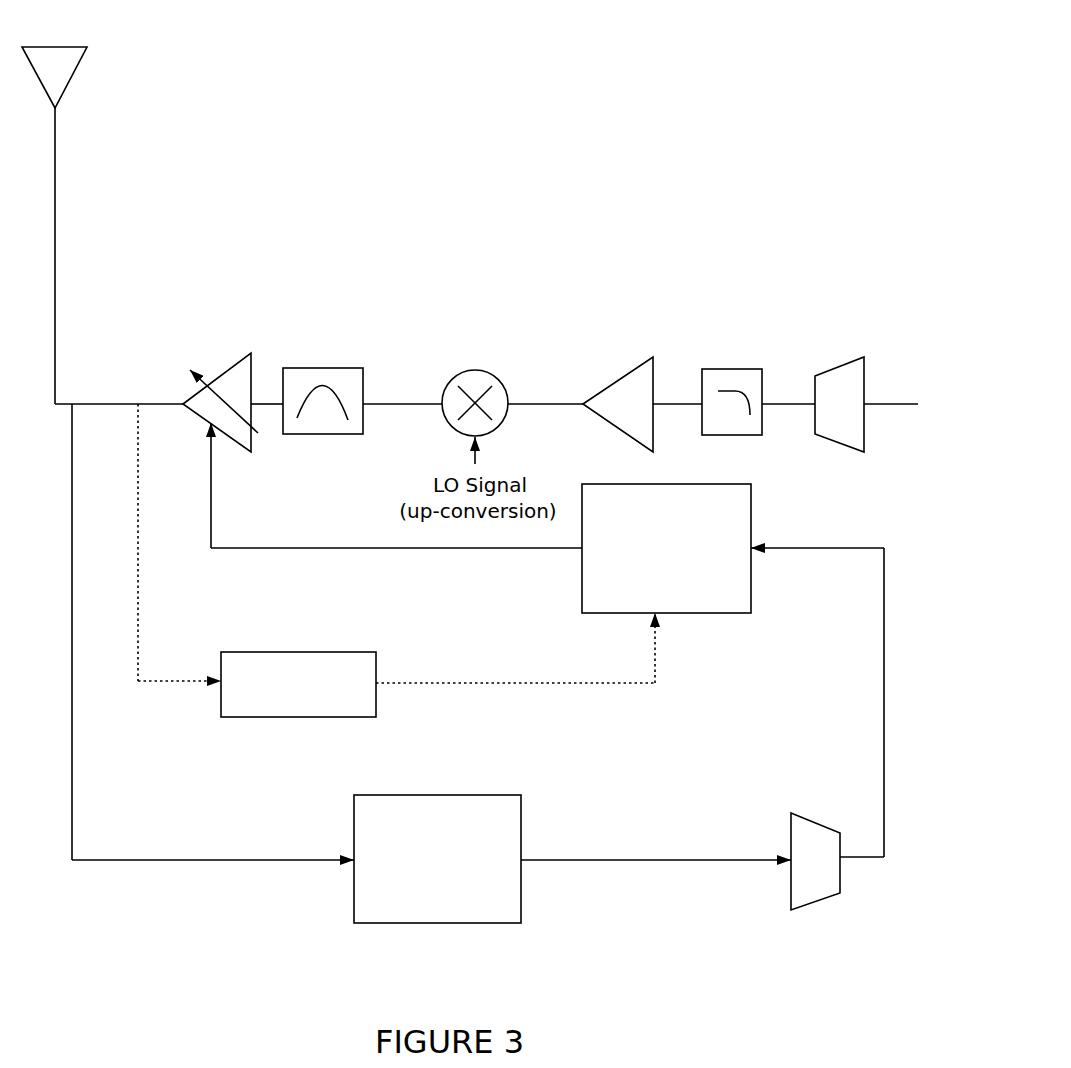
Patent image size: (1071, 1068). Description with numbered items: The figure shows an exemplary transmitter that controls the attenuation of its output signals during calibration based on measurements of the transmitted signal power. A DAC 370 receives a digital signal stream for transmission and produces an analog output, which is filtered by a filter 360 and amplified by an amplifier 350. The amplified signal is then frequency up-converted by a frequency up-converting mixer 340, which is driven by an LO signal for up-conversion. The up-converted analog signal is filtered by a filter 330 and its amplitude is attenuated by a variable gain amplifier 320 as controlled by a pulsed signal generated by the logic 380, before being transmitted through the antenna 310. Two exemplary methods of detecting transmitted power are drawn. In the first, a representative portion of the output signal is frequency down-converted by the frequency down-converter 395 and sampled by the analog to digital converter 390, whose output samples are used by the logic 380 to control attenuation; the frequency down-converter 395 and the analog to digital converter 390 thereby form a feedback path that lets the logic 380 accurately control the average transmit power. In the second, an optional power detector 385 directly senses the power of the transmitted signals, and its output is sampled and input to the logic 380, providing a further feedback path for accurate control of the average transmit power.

The antenna 310 is at (57, 138).
The variable gain amplifier 320 is at (232, 372).
The filter 330 is at (312, 380).
The frequency up-converting mixer 340 is at (470, 382).
The amplifier 350 is at (606, 385).
The filter 360 is at (733, 375).
The DAC 370 is at (846, 378).
The logic 380 is at (733, 513).
The power detector 385 is at (357, 702).
The analog to digital converter (ADC) 390 is at (808, 886).
The frequency down-converter 395 is at (502, 905).